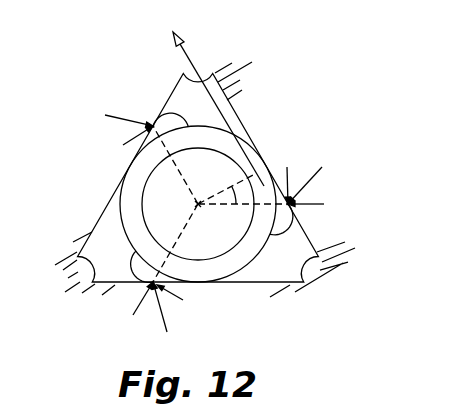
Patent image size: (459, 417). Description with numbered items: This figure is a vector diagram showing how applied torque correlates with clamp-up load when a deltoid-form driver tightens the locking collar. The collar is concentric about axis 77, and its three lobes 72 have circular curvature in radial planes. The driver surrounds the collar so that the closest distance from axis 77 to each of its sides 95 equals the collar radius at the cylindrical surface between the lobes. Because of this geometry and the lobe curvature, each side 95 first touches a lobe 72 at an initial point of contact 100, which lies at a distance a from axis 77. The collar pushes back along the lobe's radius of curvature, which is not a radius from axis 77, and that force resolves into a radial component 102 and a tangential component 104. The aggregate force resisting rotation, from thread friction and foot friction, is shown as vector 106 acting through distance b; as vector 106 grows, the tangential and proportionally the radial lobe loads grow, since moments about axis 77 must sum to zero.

The lobes 72 is at (140, 270).
The common axis 77 is at (198, 204).
The sides of insert 95 is at (98, 225).
The initial point of contact 100 is at (298, 169).
The radial force component vector 102 is at (148, 117).
The tangential force component vector 104 is at (123, 145).
The total resisting force vector 106 is at (192, 62).